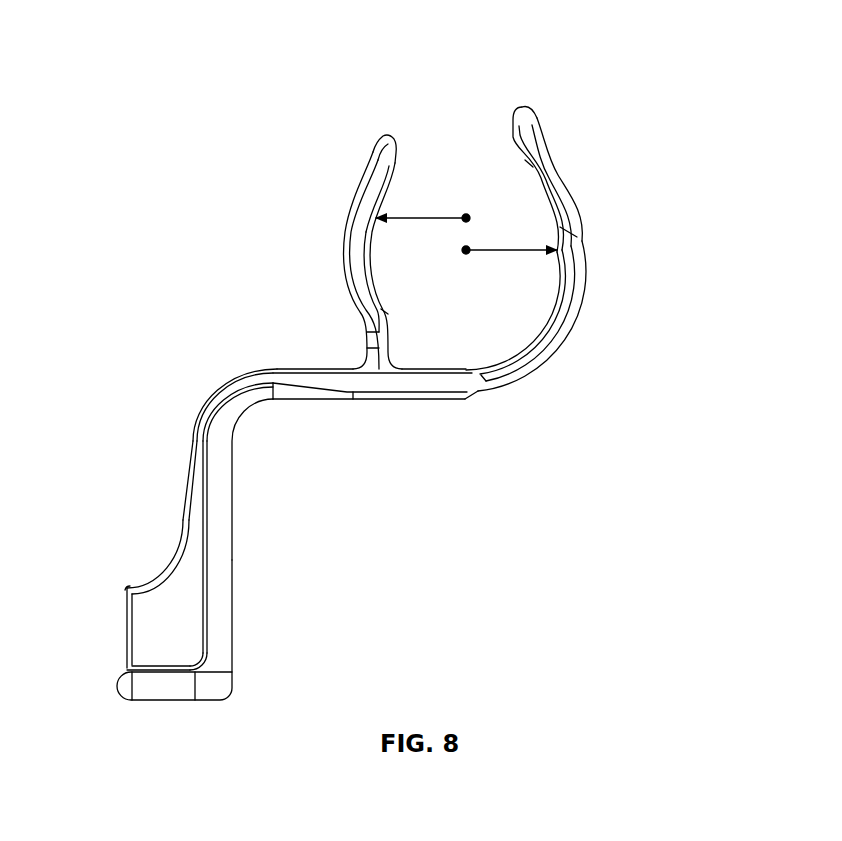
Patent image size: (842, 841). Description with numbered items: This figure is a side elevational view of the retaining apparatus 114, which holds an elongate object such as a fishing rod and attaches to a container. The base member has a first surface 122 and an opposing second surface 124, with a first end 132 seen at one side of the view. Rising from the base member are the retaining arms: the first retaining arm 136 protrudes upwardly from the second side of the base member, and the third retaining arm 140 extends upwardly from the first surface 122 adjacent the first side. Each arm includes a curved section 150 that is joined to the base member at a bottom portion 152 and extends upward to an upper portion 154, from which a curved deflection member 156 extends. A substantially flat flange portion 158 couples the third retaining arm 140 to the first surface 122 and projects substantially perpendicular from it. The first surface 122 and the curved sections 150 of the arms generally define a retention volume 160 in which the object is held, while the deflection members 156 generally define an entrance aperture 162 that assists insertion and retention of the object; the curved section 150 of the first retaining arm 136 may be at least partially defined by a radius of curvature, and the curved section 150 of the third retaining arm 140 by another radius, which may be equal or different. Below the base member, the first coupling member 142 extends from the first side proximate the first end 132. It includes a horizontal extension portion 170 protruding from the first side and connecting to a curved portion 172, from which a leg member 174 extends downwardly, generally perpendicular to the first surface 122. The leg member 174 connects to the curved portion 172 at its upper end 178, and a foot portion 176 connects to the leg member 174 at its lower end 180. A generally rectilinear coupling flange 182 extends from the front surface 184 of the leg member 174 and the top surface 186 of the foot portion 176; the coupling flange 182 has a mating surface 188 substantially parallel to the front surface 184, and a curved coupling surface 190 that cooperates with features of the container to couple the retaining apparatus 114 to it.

The retaining apparatus 114 is at (199, 73).
The entrance aperture 162 is at (450, 101).
The third retaining arm 140 is at (355, 218).
The first retaining arm 136 is at (567, 215).
The curved section 150 is at (345, 262).
The bottom portion 152 is at (366, 323).
The upper portion 154 is at (375, 178).
The deflection member 156 is at (383, 142).
The flange portion 158 is at (364, 348).
The retention volume 160 is at (503, 287).
The first surface 122 is at (432, 366).
The second surface 124 is at (413, 403).
The first end 132 is at (372, 385).
The horizontal extension portion 170 is at (320, 385).
The curved portion 172 is at (247, 373).
The first coupling member 142 is at (196, 415).
The leg member 174 is at (220, 558).
The upper end 178 is at (230, 462).
The lower end 180 is at (220, 656).
The foot portion 176 is at (162, 700).
The curved coupling surface 190 is at (179, 535).
The coupling flange 182 is at (142, 603).
The mating surface 188 is at (121, 618).
The top surface 186 is at (141, 662).
The front surface 184 is at (190, 598).